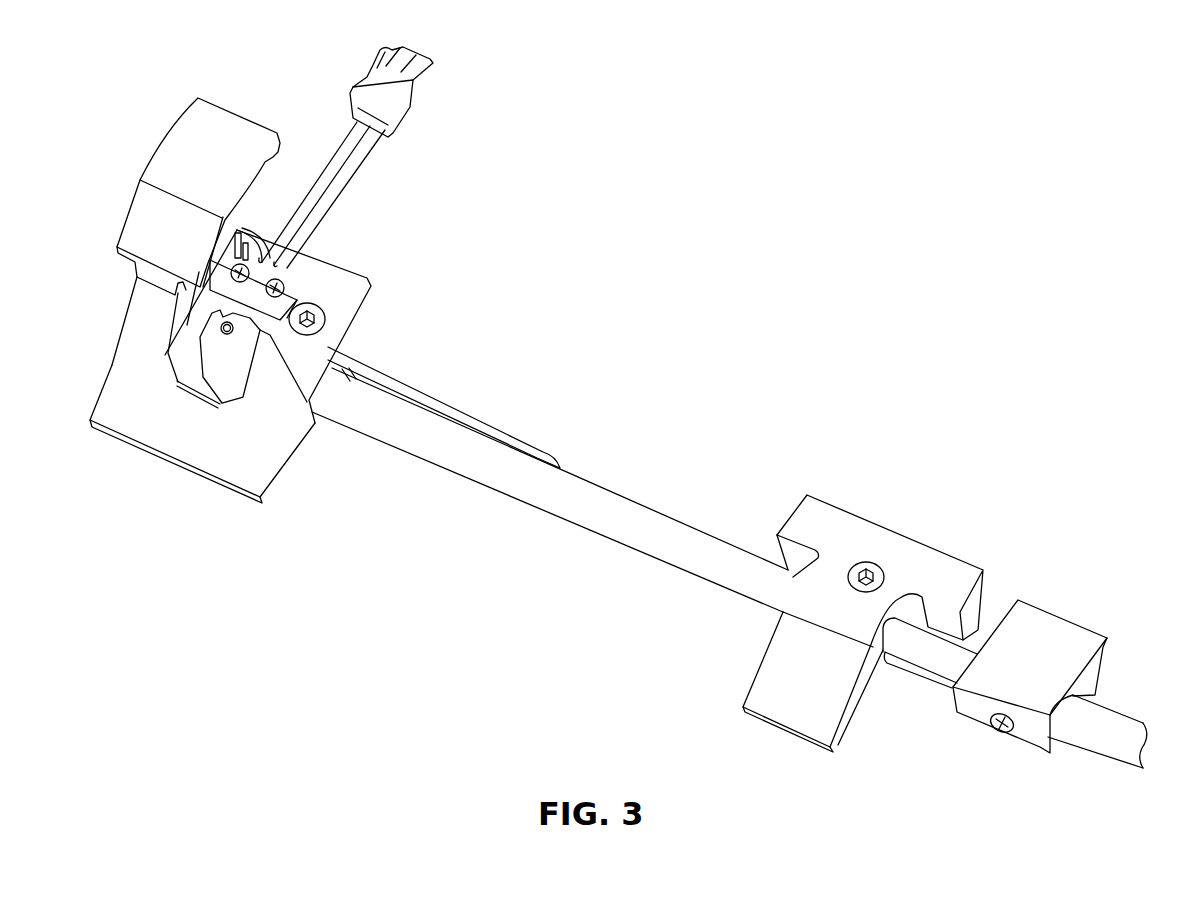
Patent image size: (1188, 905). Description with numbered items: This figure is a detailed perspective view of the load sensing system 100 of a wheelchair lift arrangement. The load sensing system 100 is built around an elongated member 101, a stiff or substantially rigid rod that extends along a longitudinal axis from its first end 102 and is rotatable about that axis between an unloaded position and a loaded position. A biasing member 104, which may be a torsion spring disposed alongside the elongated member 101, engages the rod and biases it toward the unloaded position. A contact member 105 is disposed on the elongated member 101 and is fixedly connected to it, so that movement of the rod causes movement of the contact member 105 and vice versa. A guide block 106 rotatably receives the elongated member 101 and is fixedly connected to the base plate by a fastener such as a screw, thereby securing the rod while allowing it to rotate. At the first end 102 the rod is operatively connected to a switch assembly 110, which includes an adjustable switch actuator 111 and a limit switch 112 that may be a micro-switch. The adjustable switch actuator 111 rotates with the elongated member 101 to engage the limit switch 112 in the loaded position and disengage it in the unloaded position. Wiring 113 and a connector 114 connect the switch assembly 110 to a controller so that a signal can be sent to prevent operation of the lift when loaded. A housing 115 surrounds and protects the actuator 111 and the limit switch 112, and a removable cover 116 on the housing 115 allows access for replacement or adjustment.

The load sensing system 100 is at (886, 161).
The elongated member 101 is at (622, 507).
The first end 102 is at (312, 398).
The biasing member 104 is at (440, 403).
The contact member 105 is at (1050, 613).
The guide block 106 is at (830, 502).
The switch assembly 110 is at (95, 190).
The adjustable switch actuator 111 is at (218, 358).
The limit switch 112 is at (317, 243).
The wiring 113 is at (360, 163).
The connector 114 is at (427, 80).
The housing 115 is at (243, 433).
The removable cover 116 is at (197, 130).